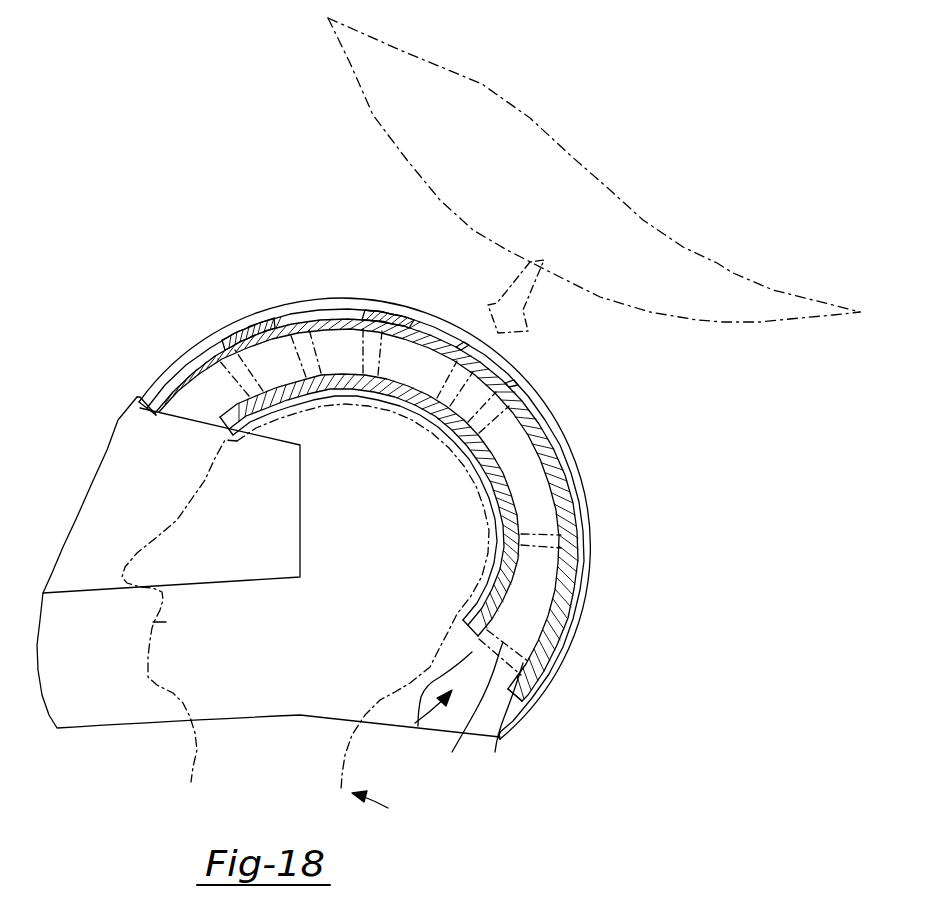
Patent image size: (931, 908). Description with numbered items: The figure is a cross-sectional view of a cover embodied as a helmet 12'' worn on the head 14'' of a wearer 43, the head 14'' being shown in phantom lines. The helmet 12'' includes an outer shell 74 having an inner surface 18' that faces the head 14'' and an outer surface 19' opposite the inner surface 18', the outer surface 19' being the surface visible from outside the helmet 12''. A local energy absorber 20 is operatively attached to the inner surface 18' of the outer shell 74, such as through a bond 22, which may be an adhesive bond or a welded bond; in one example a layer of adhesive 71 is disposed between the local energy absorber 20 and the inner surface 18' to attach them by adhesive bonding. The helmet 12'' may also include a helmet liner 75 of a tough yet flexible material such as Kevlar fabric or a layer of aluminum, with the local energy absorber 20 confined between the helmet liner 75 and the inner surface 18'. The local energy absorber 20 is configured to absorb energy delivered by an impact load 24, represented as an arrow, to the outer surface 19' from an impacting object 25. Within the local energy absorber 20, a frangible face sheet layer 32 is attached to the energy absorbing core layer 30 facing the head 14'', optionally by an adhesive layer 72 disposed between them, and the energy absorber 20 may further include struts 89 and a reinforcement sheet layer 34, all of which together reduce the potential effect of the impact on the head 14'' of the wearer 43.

The helmet 12'' is at (357, 524).
The head 14'' is at (305, 597).
The inner surface 18' is at (533, 729).
The outer surface 19' is at (401, 510).
The local energy absorber 20 is at (433, 722).
The bond 22 is at (420, 332).
The layer of adhesive 71 is at (274, 323).
The impact load 24 is at (533, 293).
The impacting object 25 is at (723, 322).
The energy absorbing core layer 30 is at (464, 740).
The frangible face sheet layer 32 is at (450, 651).
The reinforcement sheet layer 34 is at (500, 739).
The wearer 43 is at (382, 805).
The adhesive layer 72 is at (430, 706).
The outer shell 74 is at (594, 539).
The helmet liner 75 is at (480, 617).
The struts 89 is at (300, 356).